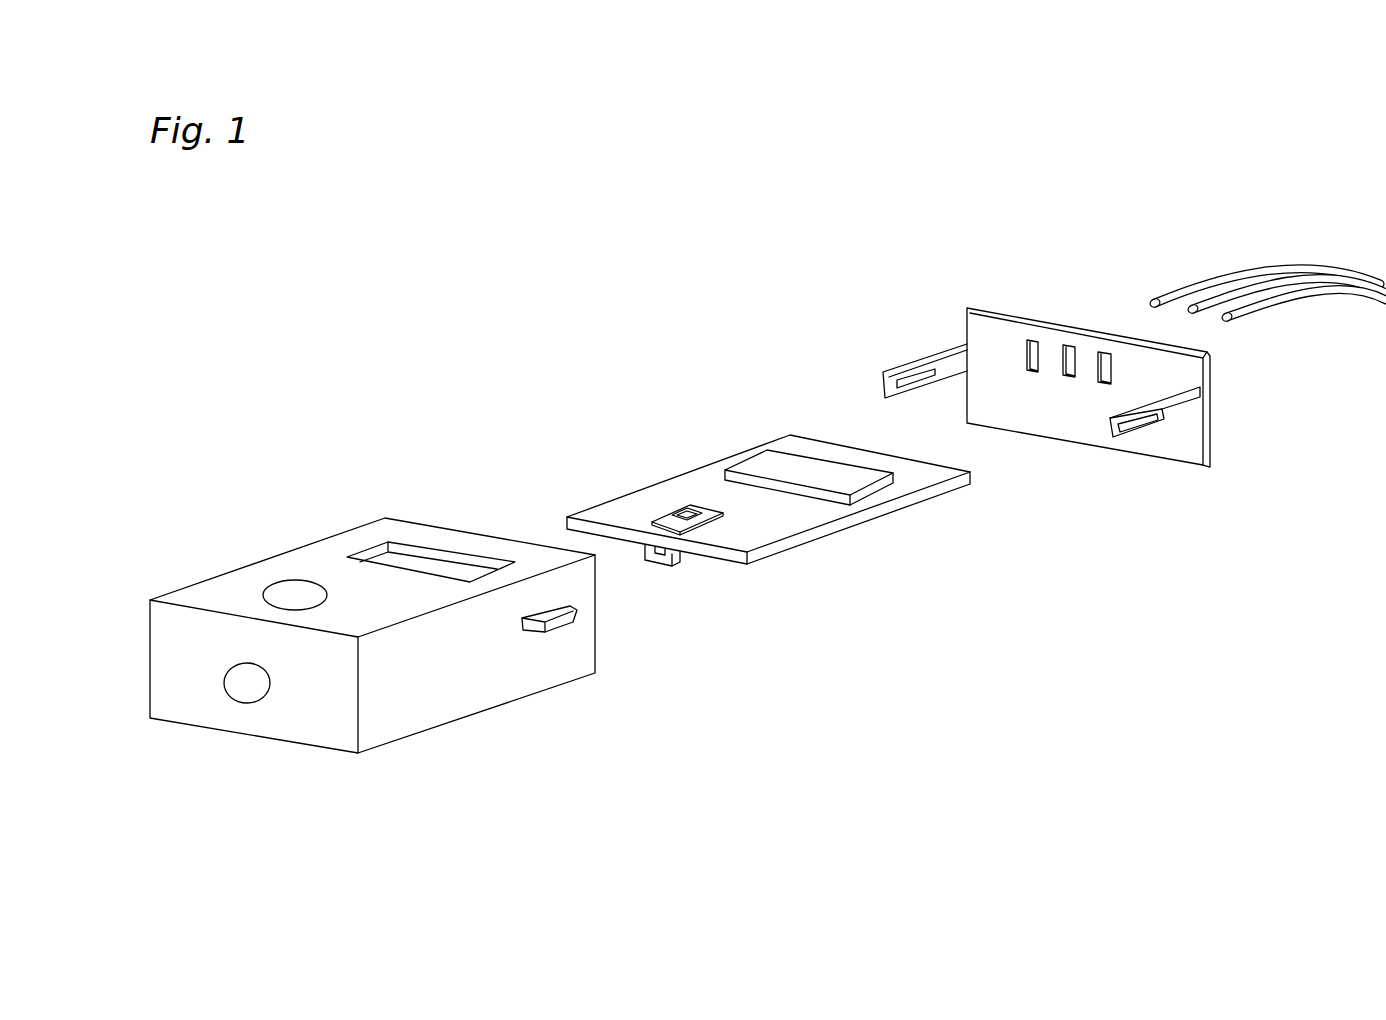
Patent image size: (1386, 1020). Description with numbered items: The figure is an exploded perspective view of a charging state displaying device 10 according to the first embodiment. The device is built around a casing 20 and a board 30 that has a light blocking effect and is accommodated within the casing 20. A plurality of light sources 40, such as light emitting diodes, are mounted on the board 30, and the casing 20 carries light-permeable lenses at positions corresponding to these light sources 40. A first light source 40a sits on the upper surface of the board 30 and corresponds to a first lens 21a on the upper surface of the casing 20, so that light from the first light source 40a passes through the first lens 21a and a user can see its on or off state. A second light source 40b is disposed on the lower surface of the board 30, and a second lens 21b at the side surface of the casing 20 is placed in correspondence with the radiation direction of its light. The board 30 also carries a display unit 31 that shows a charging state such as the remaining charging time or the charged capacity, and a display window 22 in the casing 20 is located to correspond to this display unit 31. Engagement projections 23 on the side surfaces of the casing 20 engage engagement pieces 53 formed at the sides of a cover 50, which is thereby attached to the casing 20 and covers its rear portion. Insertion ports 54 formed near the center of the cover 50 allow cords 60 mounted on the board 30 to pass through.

The charging state displaying device 10 is at (753, 287).
The casing 20 is at (362, 537).
The first lens 21a is at (297, 582).
The second lens 21b is at (237, 672).
The display window 22 is at (433, 560).
The engagement projection 23 is at (553, 630).
The board 30 is at (702, 483).
The display unit 31 is at (848, 480).
The light source 40 is at (670, 510).
The first light source 40a is at (700, 510).
The second light source 40b is at (673, 568).
The cover 50 is at (1082, 425).
The engagement piece 53 is at (1155, 430).
The insertion port 54 is at (1068, 347).
The cord 60 is at (1270, 310).